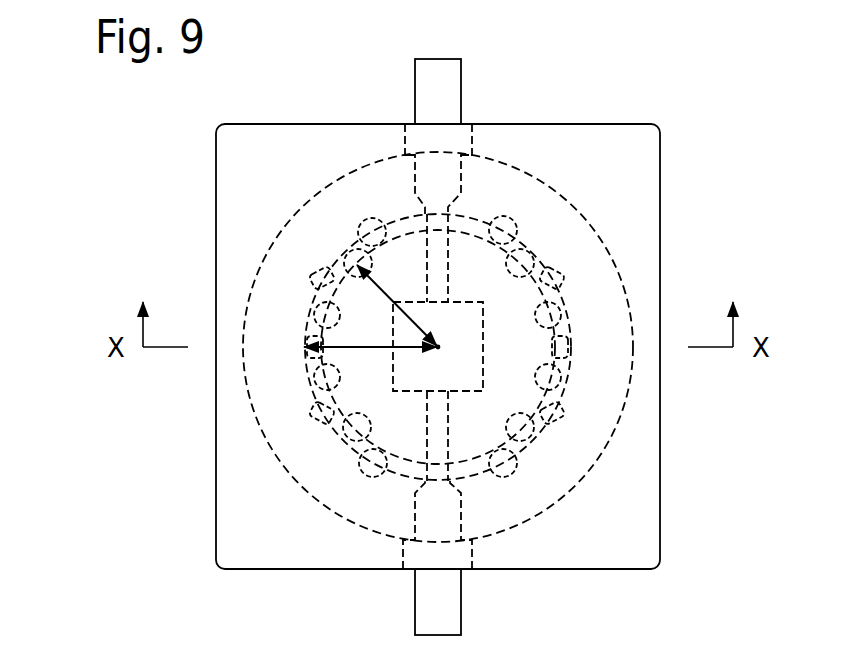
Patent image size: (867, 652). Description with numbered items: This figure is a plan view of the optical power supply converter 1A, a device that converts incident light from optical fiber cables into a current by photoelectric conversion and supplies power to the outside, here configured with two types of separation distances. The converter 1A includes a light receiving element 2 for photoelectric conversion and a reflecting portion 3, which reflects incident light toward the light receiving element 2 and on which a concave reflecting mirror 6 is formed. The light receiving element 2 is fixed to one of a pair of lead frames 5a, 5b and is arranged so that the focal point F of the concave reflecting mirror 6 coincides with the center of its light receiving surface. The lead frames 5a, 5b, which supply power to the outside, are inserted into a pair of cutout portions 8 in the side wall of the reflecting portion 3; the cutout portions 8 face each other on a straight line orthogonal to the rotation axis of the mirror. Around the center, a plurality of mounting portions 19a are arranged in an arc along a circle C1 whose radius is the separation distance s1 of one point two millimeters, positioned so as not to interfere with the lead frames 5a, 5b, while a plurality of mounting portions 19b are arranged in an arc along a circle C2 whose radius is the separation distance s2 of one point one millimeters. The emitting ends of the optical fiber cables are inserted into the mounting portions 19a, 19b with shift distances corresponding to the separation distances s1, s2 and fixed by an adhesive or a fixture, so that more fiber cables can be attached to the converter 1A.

The optical power supply converter 1A is at (176, 124).
The light receiving element 2 is at (467, 302).
The reflecting portion 3 is at (278, 124).
The lead frame 5a is at (461, 78).
The lead frame 5b is at (461, 601).
The concave reflecting mirror 6 is at (606, 246).
The cutout portion 8 is at (428, 135).
The mounting portion 19a is at (310, 280).
The mounting portion 19b is at (307, 310).
The circle C1 is at (545, 243).
The circle C2 is at (492, 227).
The separation distance s1 is at (366, 349).
The separation distance s2 is at (392, 302).
The focal point F is at (440, 347).